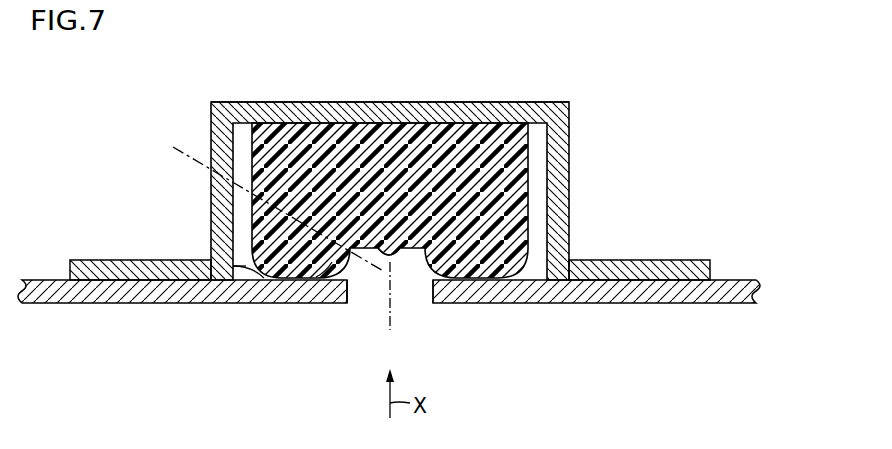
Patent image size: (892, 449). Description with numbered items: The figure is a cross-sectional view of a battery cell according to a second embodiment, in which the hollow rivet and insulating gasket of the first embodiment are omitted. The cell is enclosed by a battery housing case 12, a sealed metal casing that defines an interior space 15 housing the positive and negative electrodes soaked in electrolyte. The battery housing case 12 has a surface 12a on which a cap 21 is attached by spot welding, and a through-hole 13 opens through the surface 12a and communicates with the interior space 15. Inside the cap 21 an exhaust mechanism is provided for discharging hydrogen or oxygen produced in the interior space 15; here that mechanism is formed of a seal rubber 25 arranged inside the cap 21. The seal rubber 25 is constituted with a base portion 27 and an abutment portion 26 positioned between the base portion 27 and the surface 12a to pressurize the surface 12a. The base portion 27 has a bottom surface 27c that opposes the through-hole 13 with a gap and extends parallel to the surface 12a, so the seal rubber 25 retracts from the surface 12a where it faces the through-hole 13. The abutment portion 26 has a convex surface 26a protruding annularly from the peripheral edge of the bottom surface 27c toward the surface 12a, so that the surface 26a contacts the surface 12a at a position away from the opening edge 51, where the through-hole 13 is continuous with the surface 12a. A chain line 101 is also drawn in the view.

The battery housing case 12 is at (687, 290).
The surface 12a is at (432, 267).
The through-hole 13 is at (346, 290).
The interior space 15 is at (697, 338).
The cap 21 is at (281, 104).
The seal rubber 25 is at (511, 108).
The abutment portion 26 is at (296, 266).
The surface 26a is at (246, 267).
The base portion 27 is at (462, 152).
The bottom surface 27c is at (388, 252).
The opening edge 51 is at (326, 268).
The virtual line 101 is at (260, 205).